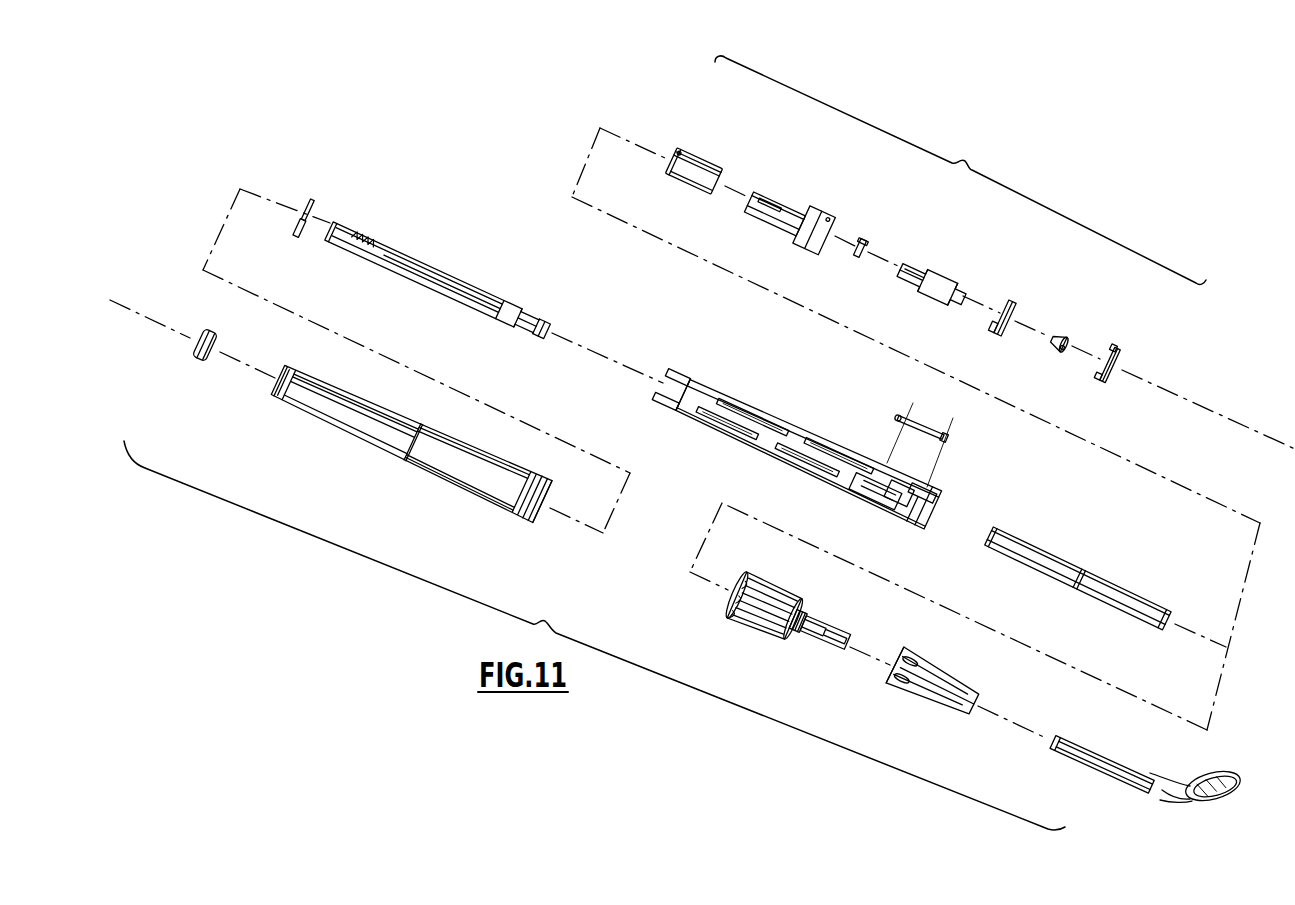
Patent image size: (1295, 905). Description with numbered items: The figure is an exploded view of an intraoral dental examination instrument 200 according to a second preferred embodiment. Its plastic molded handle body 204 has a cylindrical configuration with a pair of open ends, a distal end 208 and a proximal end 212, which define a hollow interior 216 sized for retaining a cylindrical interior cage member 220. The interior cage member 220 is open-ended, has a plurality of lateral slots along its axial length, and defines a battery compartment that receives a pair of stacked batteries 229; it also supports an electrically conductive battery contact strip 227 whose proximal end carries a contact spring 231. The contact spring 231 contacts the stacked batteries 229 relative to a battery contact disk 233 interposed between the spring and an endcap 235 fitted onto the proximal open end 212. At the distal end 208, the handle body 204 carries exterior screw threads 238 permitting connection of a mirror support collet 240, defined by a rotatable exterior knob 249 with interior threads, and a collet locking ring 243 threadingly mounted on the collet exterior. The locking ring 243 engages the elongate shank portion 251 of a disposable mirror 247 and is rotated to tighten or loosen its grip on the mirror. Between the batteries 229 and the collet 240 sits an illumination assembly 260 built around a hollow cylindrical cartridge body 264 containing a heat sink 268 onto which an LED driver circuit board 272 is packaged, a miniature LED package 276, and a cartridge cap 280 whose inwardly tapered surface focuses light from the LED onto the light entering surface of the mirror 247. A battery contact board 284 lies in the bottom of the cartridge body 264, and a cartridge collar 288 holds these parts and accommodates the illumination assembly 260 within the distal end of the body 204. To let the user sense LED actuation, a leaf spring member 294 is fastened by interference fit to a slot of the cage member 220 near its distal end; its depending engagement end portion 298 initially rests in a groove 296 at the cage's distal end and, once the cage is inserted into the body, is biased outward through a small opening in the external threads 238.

The intraoral dental examination instrument 200 is at (468, 112).
The handle body 204 is at (406, 466).
The distal open end 208 is at (537, 499).
The proximal open end 212 is at (285, 383).
The hollow interior 216 is at (467, 467).
The interior cage member 220 is at (841, 441).
The battery contact strip 227 is at (438, 264).
The batteries 229 is at (1051, 548).
The contact spring 231 is at (364, 239).
The battery contact disk 233 is at (312, 201).
The endcap 235 is at (198, 364).
The exterior screw threads 238 is at (524, 493).
The mirror support collet 240 is at (780, 625).
The collet locking ring 243 is at (933, 703).
The disposable mirror 247 is at (1140, 789).
The rotatable exterior knob 249 is at (760, 637).
The shank portion 251 is at (1111, 757).
The illumination assembly 260 is at (960, 170).
The cartridge body 264 is at (793, 207).
The heat sink 268 is at (938, 272).
The LED driver circuit board 272 is at (1020, 302).
The miniature LED package 276 is at (1070, 343).
The cartridge cap 280 is at (1117, 350).
The battery contact board 284 is at (866, 243).
The cartridge collar 288 is at (703, 152).
The spring member 294 is at (956, 437).
The groove 296 is at (918, 502).
The engagement end portion 298 is at (921, 422).